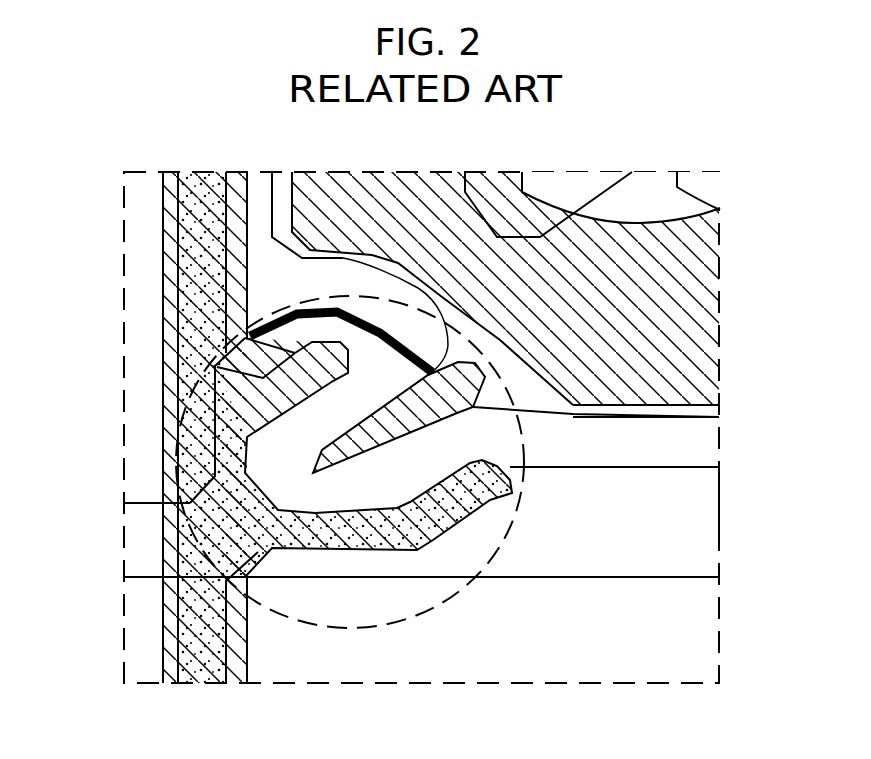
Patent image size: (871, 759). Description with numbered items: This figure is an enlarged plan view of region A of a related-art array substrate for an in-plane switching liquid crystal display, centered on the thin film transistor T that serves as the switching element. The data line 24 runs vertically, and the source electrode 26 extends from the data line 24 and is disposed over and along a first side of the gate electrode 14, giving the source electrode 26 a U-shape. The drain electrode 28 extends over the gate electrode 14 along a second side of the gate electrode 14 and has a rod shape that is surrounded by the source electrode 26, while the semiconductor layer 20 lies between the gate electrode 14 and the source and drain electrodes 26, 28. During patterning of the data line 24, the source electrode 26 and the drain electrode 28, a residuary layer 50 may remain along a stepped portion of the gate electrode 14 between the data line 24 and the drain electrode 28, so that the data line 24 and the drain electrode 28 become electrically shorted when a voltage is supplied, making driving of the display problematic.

The gate electrode 14 is at (297, 318).
The data line 24 is at (195, 325).
The thin film transistor T is at (183, 413).
The source electrode 26 is at (374, 512).
The drain electrode 28 is at (443, 515).
The semiconductor layer 20 is at (505, 535).
The residuary layer 50 is at (345, 313).
The region A is at (720, 510).